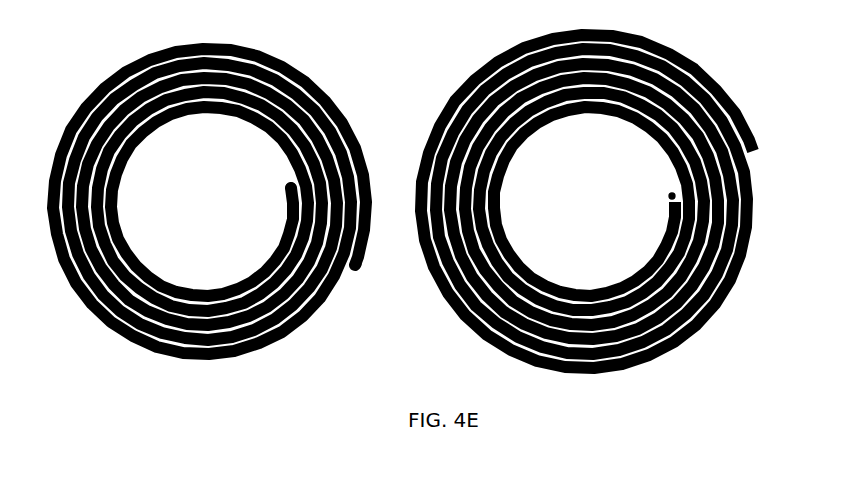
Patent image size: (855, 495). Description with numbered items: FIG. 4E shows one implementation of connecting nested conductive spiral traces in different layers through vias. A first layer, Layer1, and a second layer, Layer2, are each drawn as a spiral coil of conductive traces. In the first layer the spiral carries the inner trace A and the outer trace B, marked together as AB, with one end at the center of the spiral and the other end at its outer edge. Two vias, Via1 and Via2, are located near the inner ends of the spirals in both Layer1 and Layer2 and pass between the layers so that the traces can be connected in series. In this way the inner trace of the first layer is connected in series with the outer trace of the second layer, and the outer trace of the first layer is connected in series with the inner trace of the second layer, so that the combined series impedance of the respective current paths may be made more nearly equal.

The first layer Layer1 is at (209, 182).
The second layer Layer2 is at (587, 189).
The via Via1 is at (284, 195).
The via Via2 is at (290, 209).
The traces A and B AB is at (328, 222).